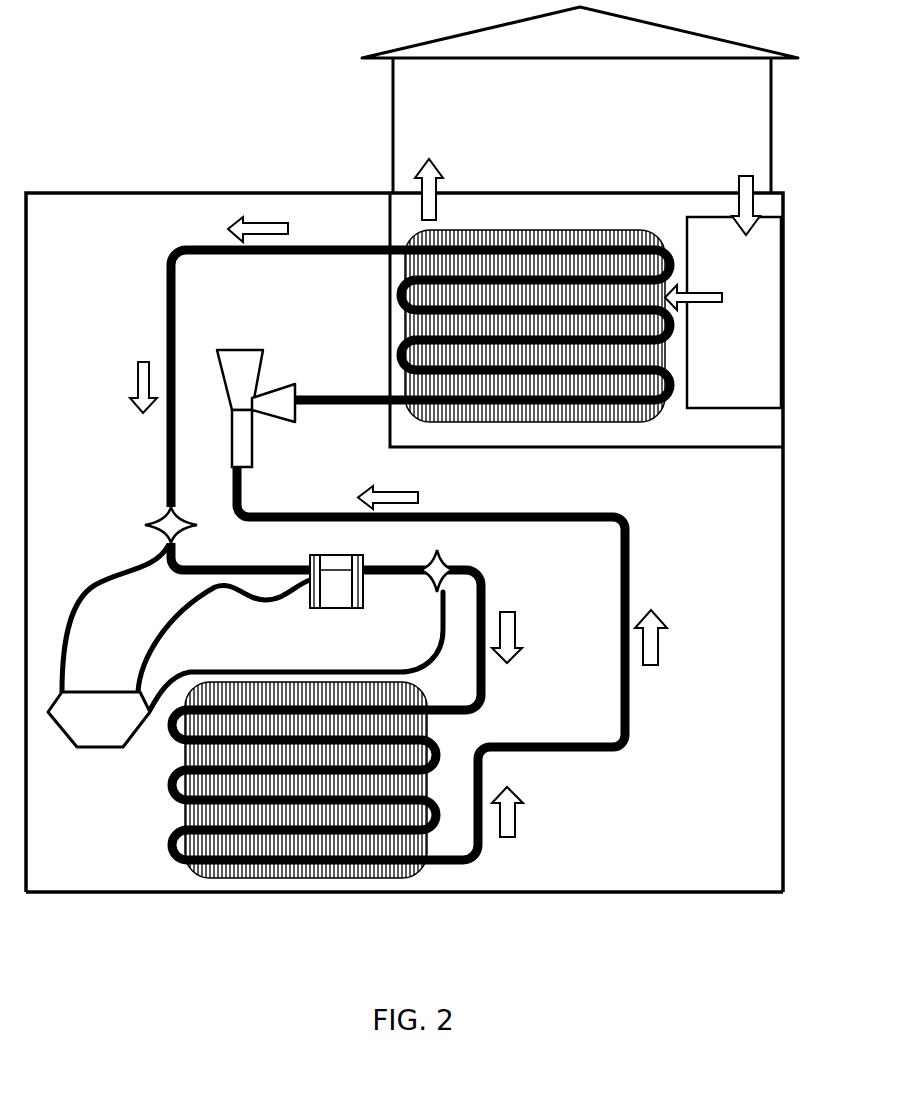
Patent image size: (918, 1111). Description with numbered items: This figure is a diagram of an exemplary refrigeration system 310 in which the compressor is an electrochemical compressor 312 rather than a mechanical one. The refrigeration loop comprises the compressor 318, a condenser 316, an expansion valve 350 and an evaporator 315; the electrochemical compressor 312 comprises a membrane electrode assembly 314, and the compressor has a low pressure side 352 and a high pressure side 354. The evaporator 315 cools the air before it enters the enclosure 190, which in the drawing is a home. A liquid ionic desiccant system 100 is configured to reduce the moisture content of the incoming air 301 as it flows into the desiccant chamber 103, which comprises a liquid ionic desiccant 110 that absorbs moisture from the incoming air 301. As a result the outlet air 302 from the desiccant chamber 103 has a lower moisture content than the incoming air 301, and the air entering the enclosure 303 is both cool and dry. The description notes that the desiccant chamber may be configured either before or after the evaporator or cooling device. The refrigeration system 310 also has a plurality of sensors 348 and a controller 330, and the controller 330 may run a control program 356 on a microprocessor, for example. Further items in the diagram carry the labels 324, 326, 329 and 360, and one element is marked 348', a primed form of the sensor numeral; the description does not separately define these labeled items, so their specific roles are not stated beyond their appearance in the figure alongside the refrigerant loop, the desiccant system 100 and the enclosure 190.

The enclosure 190 is at (530, 101).
The refrigeration system 310 is at (176, 190).
The enclosure bottom wall 329 is at (703, 893).
The liquid ionic desiccant system 100 is at (722, 269).
The liquid ionic desiccant 110 is at (735, 314).
The desiccant chamber 103 is at (719, 396).
The air entering the enclosure 303 is at (428, 200).
The incoming air 301 is at (746, 172).
The outlet air 302 is at (690, 297).
The evaporator 315 is at (535, 228).
The expansion valve 350 is at (265, 348).
The refrigerant line 324 is at (633, 700).
The refrigerant line 326 is at (630, 745).
The second junction 348' is at (492, 630).
The condenser 316 is at (272, 878).
The outdoor coil 360 is at (400, 880).
The control program 356 is at (115, 710).
The membrane electrode assembly 314 is at (310, 608).
The controller 330 is at (100, 702).
The sensors 348 is at (132, 526).
The electrochemical compressor 312 is at (343, 578).
The low pressure side 352 is at (312, 565).
The high pressure side 354 is at (360, 557).
The compressor 318 is at (330, 580).